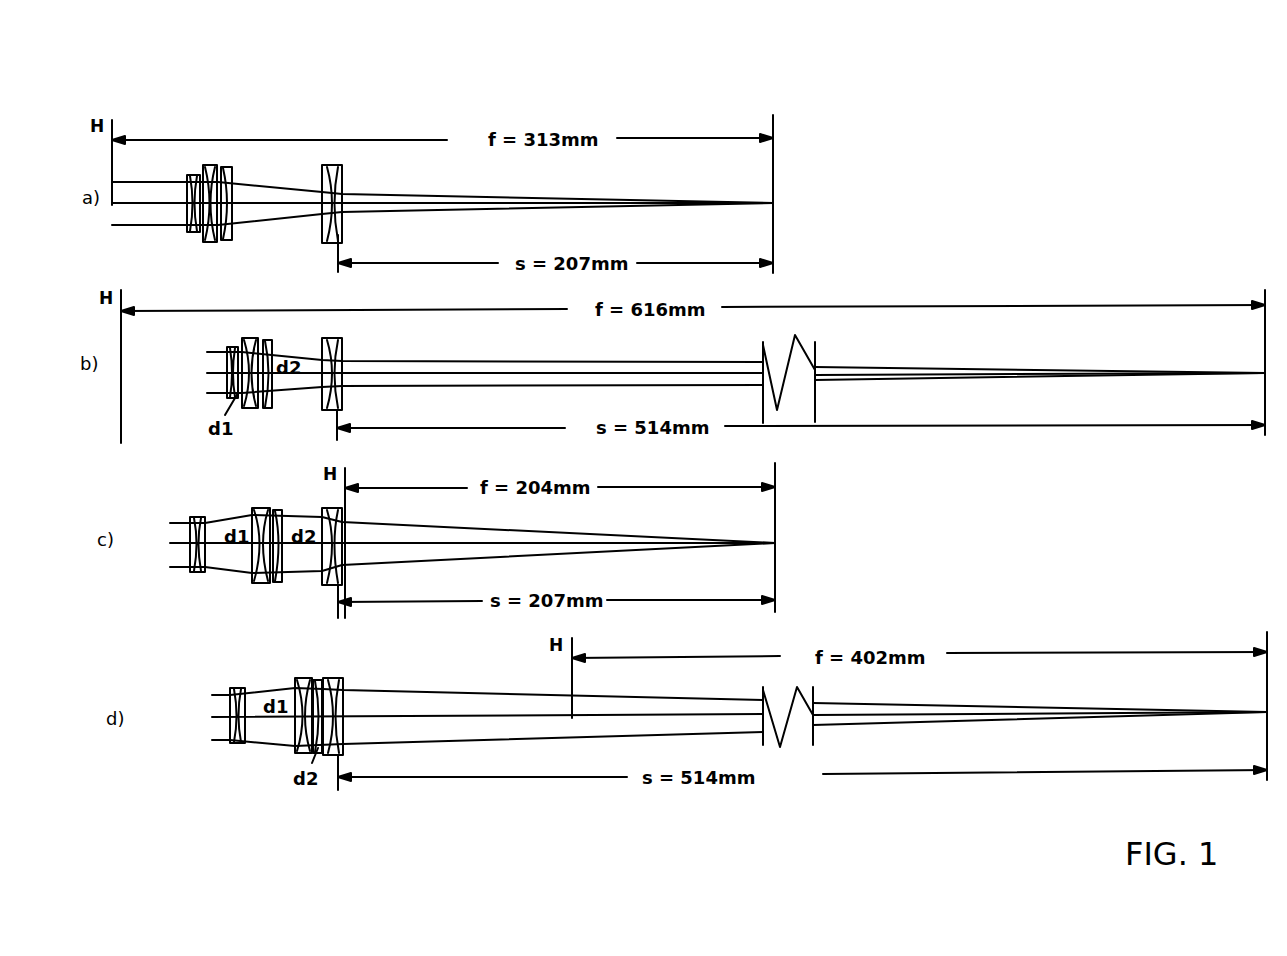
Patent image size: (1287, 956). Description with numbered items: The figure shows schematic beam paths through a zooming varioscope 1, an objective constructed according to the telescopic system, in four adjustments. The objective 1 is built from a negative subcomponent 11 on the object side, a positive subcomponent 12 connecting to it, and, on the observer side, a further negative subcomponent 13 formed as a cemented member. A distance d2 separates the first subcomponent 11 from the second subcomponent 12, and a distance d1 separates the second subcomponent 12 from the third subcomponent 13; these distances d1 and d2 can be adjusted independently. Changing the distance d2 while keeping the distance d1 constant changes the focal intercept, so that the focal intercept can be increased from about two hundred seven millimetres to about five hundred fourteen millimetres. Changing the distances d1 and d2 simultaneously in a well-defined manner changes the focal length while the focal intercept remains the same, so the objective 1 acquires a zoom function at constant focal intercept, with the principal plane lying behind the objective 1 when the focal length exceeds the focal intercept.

The zooming varioscope 1 is at (279, 108).
The negative subcomponent 11 is at (337, 166).
The positive subcomponent 12 is at (213, 166).
The negative subcomponent 13 is at (188, 176).
The distance d1 is at (197, 230).
The distance d2 is at (248, 196).